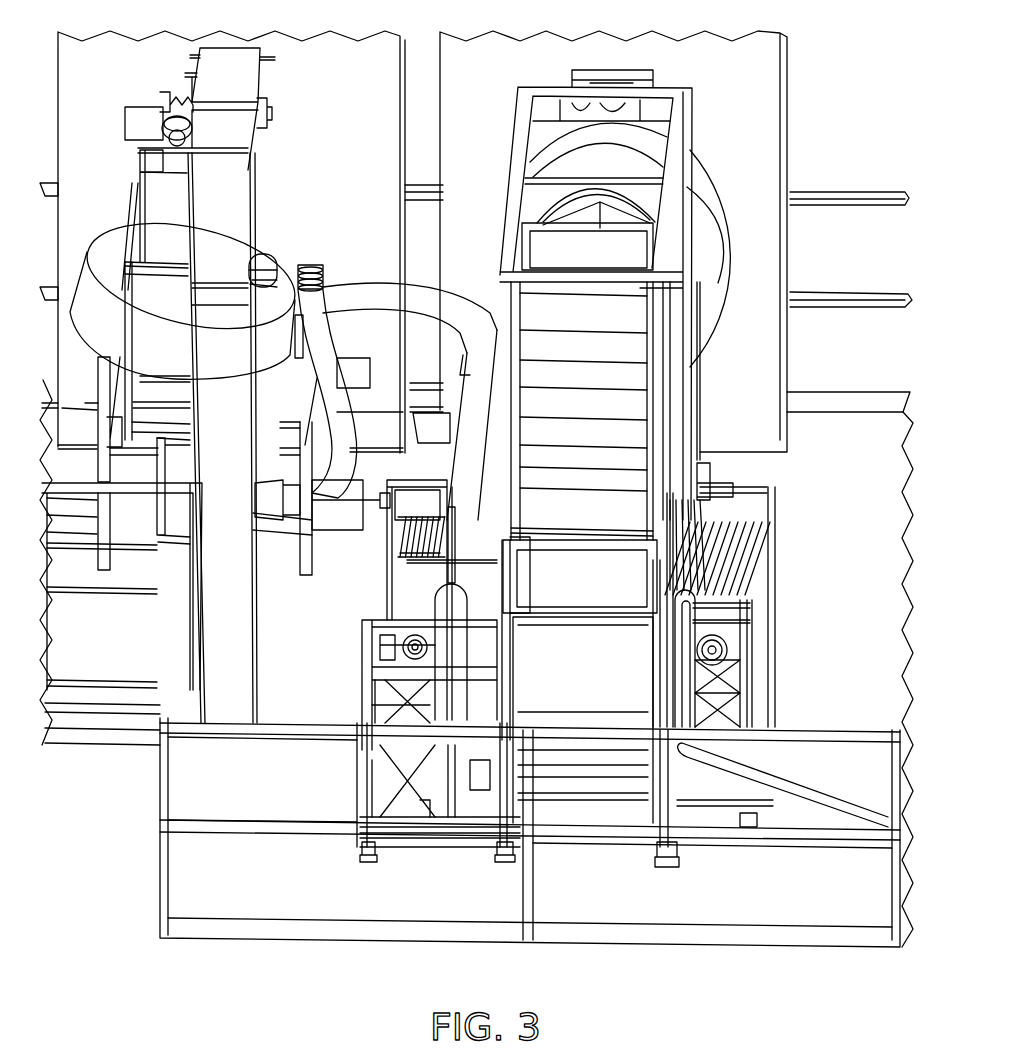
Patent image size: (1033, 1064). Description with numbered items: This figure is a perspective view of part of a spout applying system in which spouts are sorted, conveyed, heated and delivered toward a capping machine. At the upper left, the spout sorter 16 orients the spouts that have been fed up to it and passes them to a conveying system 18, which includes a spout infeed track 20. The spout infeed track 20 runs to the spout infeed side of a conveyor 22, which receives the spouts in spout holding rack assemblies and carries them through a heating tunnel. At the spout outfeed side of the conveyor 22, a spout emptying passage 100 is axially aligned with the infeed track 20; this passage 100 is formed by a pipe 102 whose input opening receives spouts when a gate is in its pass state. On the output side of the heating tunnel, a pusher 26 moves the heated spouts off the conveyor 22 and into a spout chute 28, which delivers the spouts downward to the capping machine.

The spout sorter 16 is at (87, 279).
The conveying system 18 is at (383, 287).
The spout infeed track 20 is at (465, 480).
The conveyor 22 is at (392, 612).
The spout emptying passage 100 is at (426, 588).
The pipe 102 is at (458, 628).
The pusher 26 is at (717, 504).
The spout chute 28 is at (823, 802).